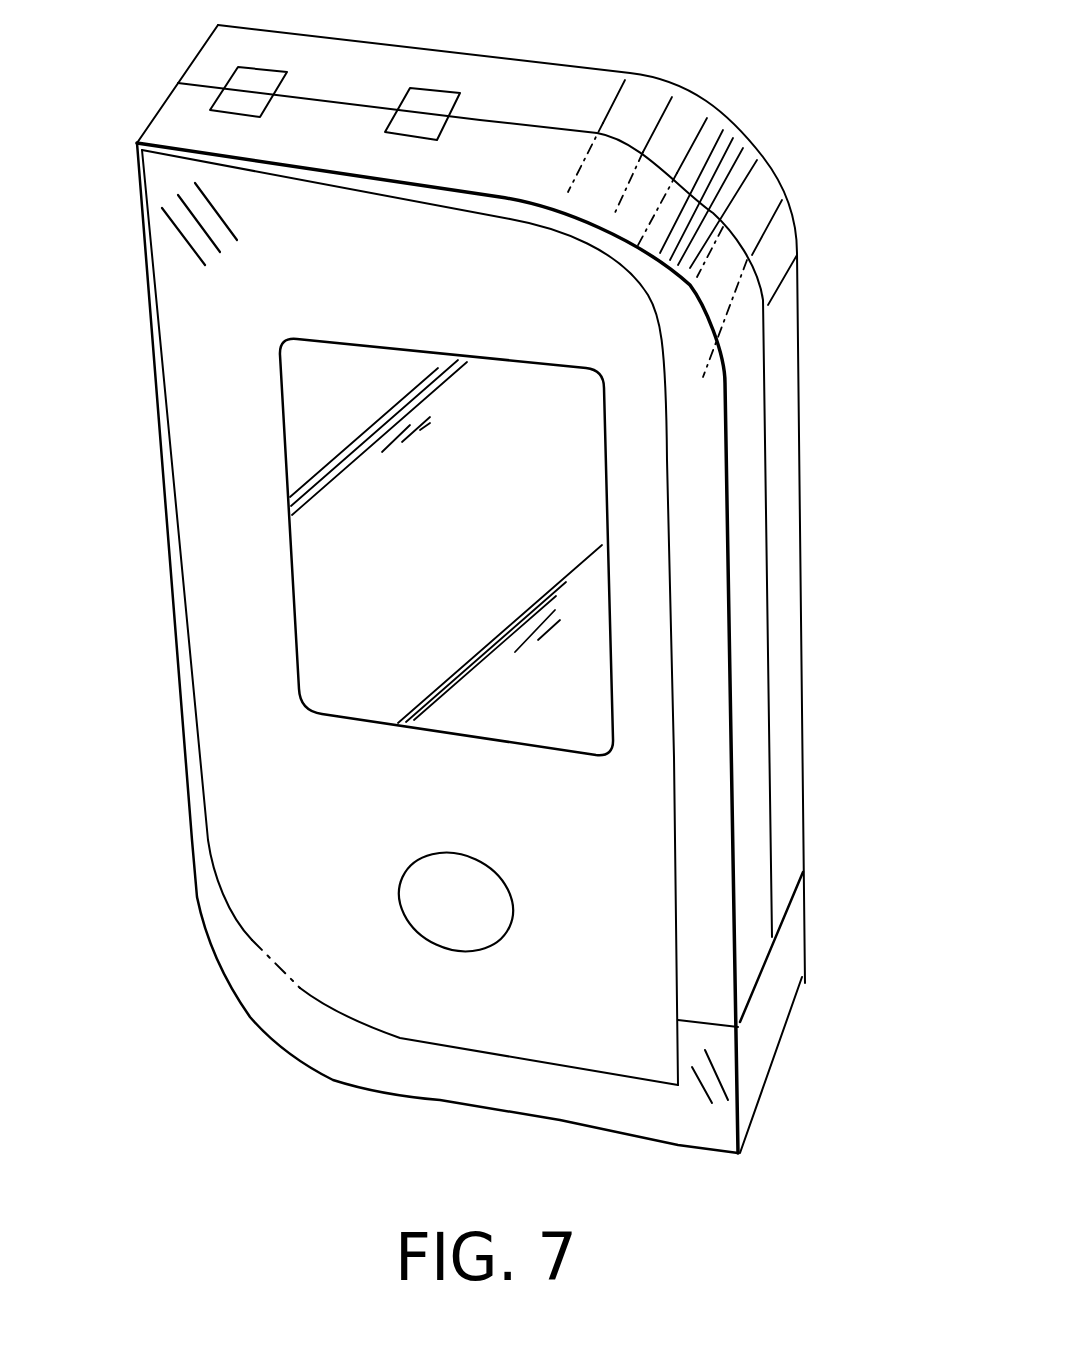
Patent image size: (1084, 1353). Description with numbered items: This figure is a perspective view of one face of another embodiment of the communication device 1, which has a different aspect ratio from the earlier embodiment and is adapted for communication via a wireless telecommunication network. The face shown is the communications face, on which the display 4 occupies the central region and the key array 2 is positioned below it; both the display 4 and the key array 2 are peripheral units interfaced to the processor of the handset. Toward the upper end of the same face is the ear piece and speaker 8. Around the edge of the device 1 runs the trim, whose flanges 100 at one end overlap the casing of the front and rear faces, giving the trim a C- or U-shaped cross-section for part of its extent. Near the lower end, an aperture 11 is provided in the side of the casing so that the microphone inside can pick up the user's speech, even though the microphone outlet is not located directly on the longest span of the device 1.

The communication device 1 is at (786, 107).
The flanges 100 is at (763, 259).
The ear piece and speaker 8 is at (185, 245).
The display 4 is at (460, 570).
The key array 2 is at (420, 882).
The aperture 11 is at (700, 1058).